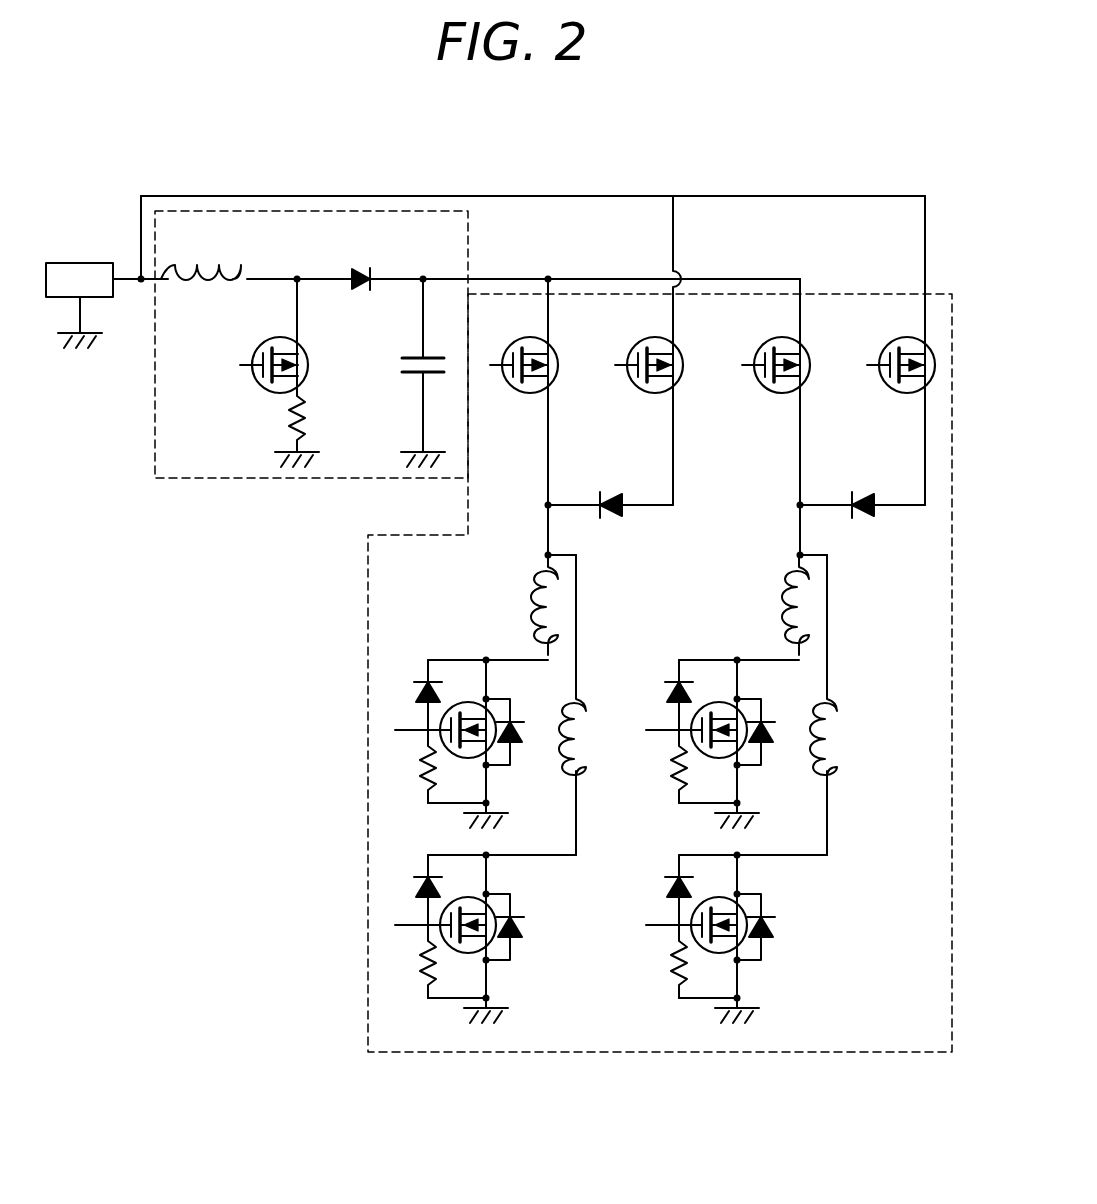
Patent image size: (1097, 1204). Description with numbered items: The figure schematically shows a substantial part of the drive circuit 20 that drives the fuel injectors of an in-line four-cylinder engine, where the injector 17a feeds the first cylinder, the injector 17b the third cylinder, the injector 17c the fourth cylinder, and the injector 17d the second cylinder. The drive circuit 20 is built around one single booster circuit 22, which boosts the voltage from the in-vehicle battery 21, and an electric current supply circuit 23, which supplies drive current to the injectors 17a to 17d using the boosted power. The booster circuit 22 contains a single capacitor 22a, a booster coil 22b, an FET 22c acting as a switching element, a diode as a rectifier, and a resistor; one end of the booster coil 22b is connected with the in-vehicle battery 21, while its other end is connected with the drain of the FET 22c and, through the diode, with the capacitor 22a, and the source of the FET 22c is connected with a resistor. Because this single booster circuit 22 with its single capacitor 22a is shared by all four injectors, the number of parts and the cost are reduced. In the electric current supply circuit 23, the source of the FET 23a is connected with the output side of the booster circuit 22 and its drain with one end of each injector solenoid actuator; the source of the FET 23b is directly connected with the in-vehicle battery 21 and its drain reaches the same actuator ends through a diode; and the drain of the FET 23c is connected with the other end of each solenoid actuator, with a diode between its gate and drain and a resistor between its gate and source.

The drive circuit 20 is at (853, 135).
The in-vehicle battery 21 is at (88, 263).
The booster circuit 22 is at (187, 480).
The capacitor 22a is at (410, 380).
The booster coil 22b is at (240, 268).
The FET 22c is at (264, 341).
The electric current supply circuit 23 is at (366, 615).
The FET 23a is at (558, 386).
The FET 23b is at (684, 386).
The FET 23c is at (462, 702).
The injector 17a is at (540, 582).
The injector 17b is at (790, 582).
The injector 17c is at (582, 692).
The injector 17d is at (834, 695).